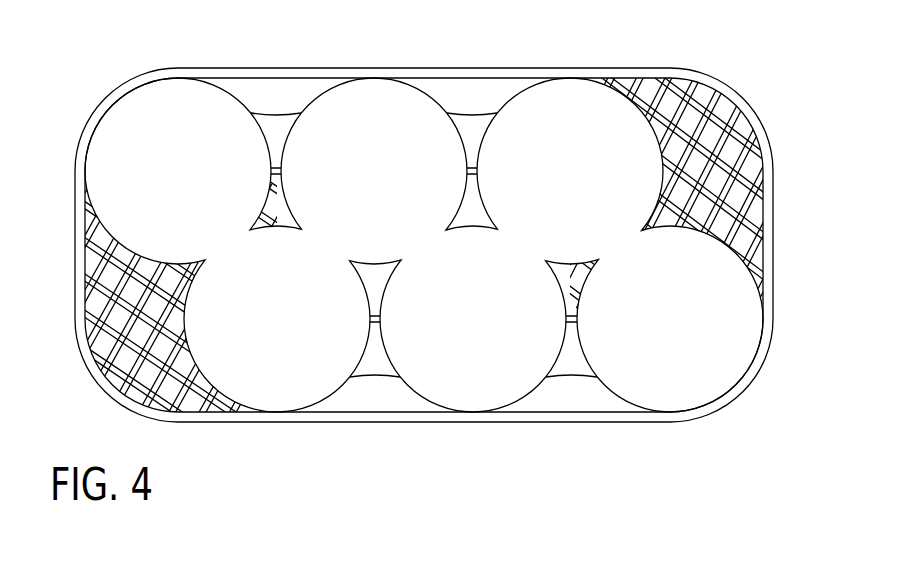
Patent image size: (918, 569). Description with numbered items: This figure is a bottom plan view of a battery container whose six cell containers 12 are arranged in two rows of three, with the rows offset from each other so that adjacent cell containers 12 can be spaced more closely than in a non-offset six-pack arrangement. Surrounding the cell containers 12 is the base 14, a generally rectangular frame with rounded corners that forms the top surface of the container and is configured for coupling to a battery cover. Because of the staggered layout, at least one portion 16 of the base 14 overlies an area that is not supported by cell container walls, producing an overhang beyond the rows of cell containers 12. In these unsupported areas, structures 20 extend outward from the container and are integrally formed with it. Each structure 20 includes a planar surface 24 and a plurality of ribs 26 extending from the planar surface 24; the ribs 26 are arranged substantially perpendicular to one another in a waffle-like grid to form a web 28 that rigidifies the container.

The cell container 12 is at (143, 117).
The base 14 is at (690, 73).
The portion of base 16 is at (767, 117).
The structure 20 is at (738, 167).
The planar surface 24 is at (745, 228).
The rib 26 is at (733, 128).
The web 28 is at (693, 108).